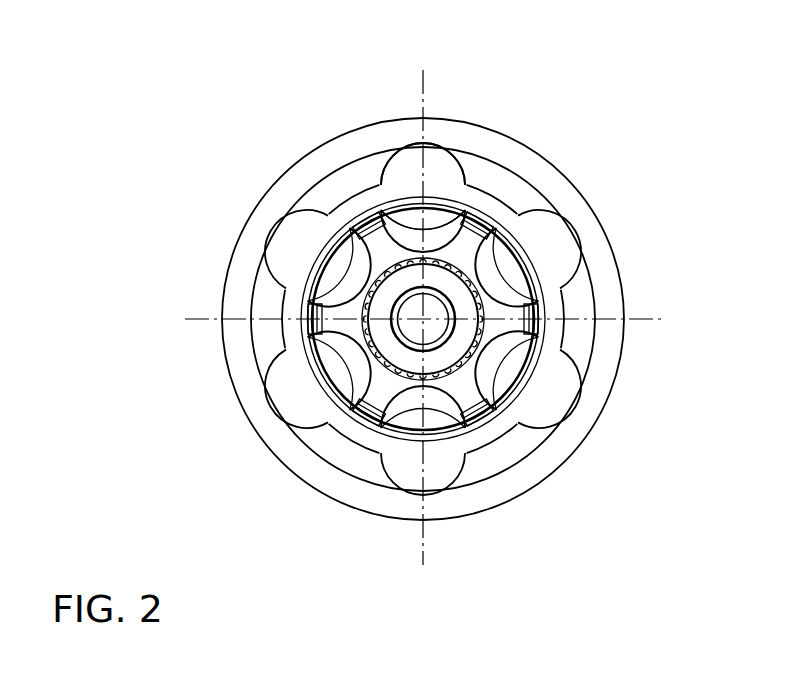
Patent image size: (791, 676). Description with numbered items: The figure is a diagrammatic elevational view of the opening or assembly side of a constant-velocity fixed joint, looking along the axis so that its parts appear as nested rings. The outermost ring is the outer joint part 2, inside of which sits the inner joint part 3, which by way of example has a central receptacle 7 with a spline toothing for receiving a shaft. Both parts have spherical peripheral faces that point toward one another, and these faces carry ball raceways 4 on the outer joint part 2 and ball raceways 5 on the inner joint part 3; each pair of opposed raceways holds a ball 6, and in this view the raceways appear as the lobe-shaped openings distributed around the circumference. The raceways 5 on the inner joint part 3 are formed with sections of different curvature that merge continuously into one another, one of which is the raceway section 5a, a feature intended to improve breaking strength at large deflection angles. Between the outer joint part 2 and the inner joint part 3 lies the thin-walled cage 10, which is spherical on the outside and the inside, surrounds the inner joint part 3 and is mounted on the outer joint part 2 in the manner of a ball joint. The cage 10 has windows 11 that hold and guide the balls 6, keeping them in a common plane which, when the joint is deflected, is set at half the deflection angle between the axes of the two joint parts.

The outer joint part 2 is at (320, 165).
The inner joint part 3 is at (383, 250).
The ball raceways 4 is at (400, 152).
The ball raceways 5 is at (395, 225).
The raceway section 5a is at (445, 237).
The ball 6 is at (440, 160).
The central receptacle 7 is at (372, 337).
The cage 10 is at (503, 213).
The windows 11 is at (468, 185).